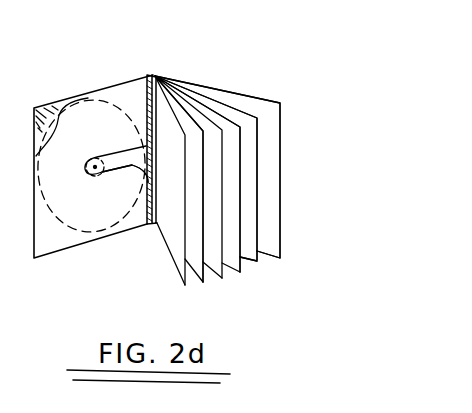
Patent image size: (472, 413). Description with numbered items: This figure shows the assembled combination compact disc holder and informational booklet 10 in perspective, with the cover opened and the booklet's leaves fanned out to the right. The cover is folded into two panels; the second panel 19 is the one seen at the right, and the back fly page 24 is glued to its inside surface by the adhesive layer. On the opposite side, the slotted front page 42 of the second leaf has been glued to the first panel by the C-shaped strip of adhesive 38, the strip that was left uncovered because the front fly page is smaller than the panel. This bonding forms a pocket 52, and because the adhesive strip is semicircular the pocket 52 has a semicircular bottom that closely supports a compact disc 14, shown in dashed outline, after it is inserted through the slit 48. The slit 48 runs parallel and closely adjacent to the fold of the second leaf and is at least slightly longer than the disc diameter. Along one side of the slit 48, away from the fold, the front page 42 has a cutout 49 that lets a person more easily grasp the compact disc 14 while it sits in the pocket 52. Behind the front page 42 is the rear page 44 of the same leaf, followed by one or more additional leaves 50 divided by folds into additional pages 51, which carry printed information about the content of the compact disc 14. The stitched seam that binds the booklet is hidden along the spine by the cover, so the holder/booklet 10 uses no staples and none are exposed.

The holder/booklet 10 is at (210, 177).
The compact disc 14 is at (150, 76).
The second panel 19 is at (276, 175).
The back fly page 24 is at (276, 175).
The C-shaped strip of adhesive 38 is at (47, 108).
The front page 42 is at (60, 106).
The rear page 44 is at (252, 261).
The slit 48 is at (148, 182).
The cutout 49 is at (105, 174).
The additional leaves 50 is at (172, 288).
The additional pages 51 is at (250, 280).
The pocket 52 is at (146, 146).